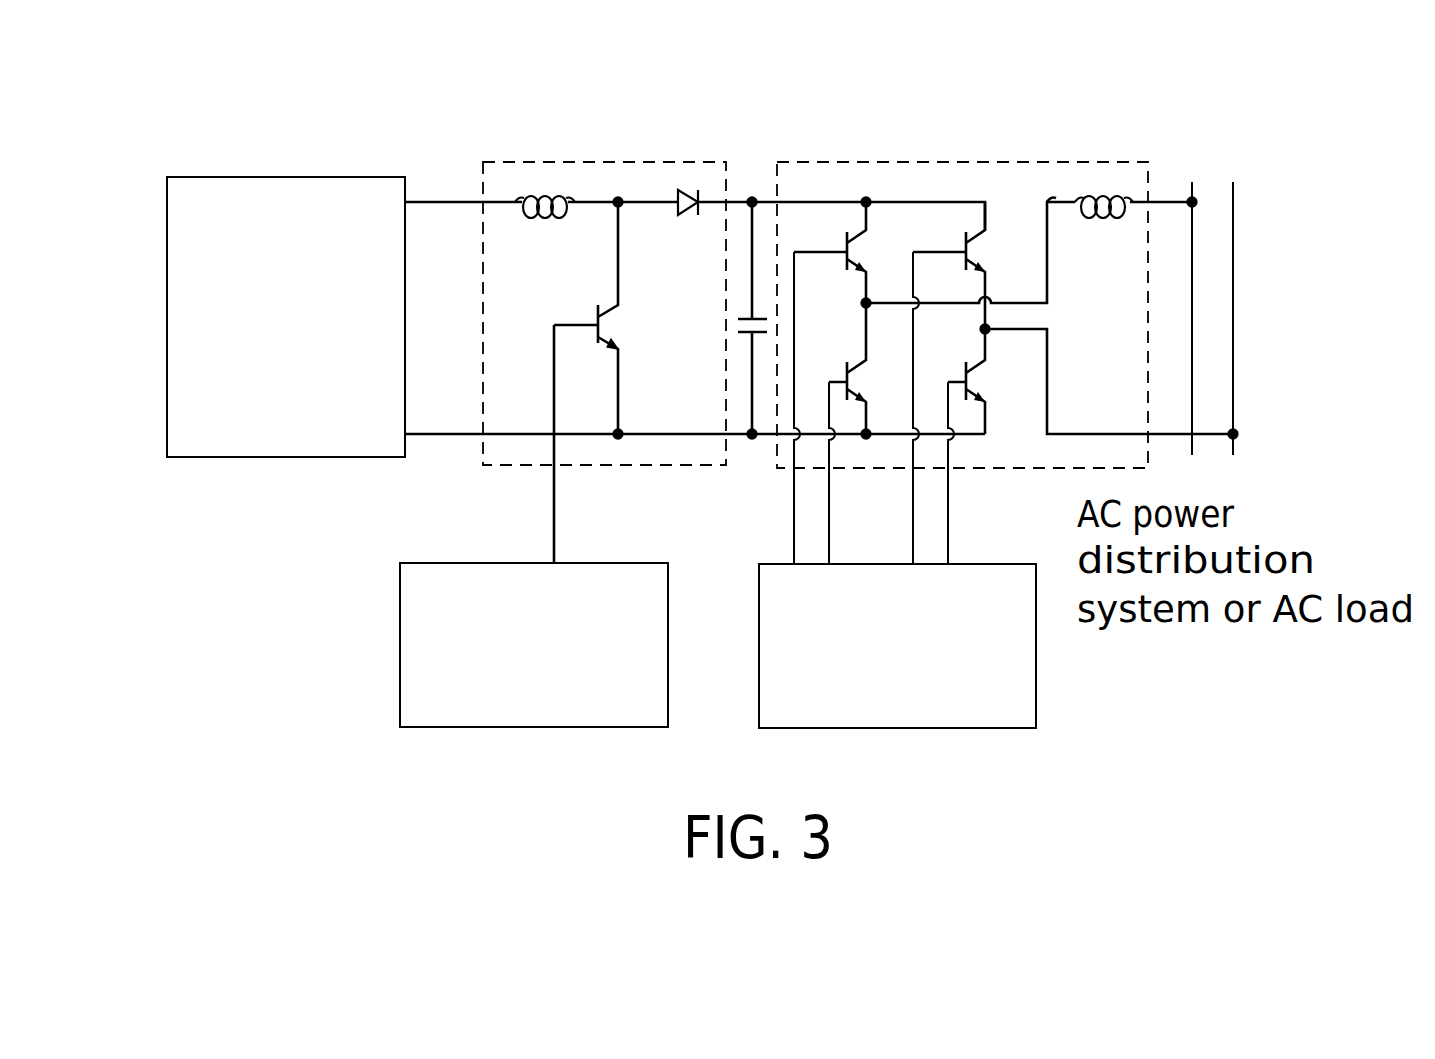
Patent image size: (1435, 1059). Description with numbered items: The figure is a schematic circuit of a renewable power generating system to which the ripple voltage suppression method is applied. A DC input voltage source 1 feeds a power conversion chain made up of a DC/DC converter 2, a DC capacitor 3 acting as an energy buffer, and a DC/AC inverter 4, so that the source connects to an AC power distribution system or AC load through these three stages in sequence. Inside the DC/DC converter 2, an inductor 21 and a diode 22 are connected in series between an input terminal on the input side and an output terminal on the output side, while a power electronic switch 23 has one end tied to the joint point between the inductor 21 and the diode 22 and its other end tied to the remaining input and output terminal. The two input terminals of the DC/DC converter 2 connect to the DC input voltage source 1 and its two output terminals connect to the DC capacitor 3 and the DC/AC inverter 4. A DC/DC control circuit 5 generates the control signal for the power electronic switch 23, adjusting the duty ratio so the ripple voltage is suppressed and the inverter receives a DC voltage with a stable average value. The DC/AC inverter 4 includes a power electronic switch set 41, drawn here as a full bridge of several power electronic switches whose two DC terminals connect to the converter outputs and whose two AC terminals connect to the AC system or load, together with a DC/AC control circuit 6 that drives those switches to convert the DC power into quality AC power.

The DC input voltage source 1 is at (291, 190).
The DC/DC converter 2 is at (483, 218).
The inductor 21 is at (546, 197).
The diode 22 is at (693, 197).
The power electronic switch 23 is at (633, 347).
The DC capacitor 3 is at (759, 308).
The DC/AC inverter 4 is at (1013, 162).
The power electronic switch set 41 is at (907, 183).
The DC/DC control circuit 5 is at (530, 727).
The DC/AC control circuit 6 is at (940, 728).